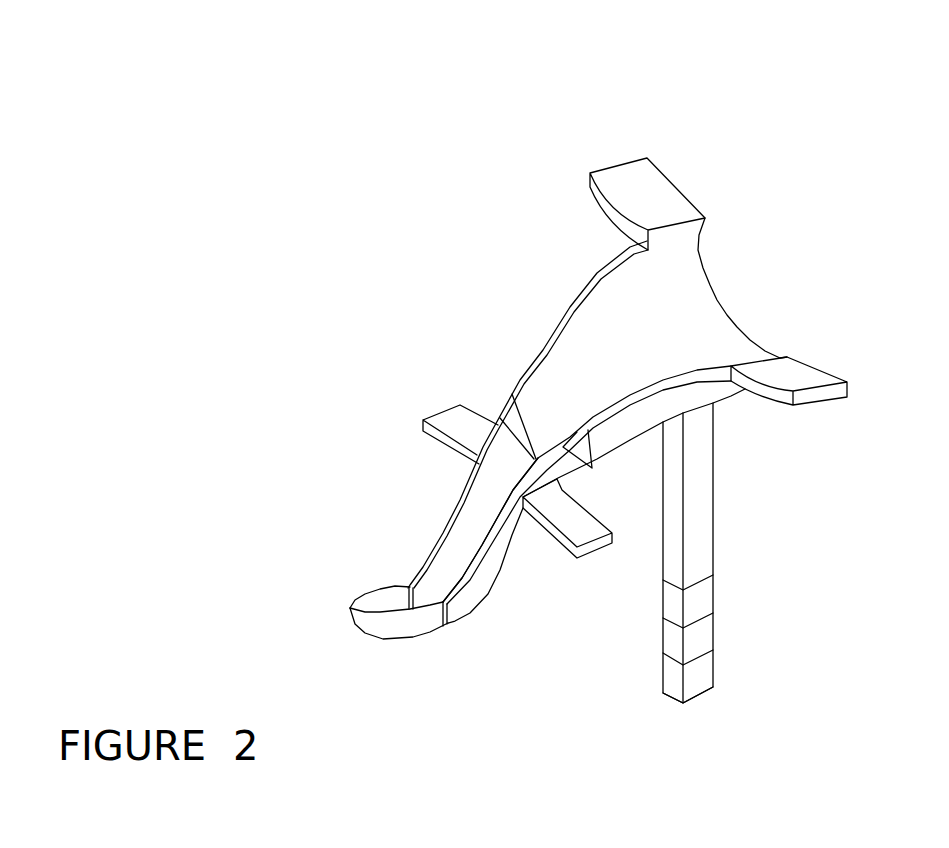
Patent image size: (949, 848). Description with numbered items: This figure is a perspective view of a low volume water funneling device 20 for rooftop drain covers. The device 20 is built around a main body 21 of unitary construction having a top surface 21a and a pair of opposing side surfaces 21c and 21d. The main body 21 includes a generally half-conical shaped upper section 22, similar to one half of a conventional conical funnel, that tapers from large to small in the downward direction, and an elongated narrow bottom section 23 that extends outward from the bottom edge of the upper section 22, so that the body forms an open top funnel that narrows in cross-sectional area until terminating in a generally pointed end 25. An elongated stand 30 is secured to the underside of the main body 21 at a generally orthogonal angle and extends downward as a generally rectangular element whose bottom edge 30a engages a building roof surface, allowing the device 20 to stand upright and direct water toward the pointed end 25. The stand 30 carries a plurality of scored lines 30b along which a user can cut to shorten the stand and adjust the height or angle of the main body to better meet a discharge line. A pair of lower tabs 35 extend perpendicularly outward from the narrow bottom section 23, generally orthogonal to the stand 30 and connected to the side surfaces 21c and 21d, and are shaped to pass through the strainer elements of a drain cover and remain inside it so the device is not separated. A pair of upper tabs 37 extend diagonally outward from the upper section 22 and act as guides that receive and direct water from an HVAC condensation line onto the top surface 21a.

The low volume water funneling device 20 is at (160, 120).
The main body 21 is at (530, 338).
The top surface 21a is at (715, 327).
The side surface 21c is at (607, 268).
The side surface 21d is at (710, 375).
The upper section 22 is at (660, 351).
The narrow bottom section 23 is at (490, 515).
The pointed end 25 is at (348, 608).
The elongated stand 30 is at (698, 492).
The bottom edge 30a is at (697, 700).
The scored lines 30b is at (713, 650).
The lower tabs 35 is at (453, 425).
The upper tabs 37 is at (652, 193).